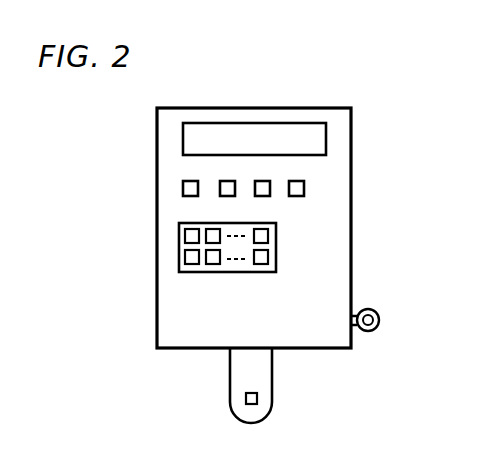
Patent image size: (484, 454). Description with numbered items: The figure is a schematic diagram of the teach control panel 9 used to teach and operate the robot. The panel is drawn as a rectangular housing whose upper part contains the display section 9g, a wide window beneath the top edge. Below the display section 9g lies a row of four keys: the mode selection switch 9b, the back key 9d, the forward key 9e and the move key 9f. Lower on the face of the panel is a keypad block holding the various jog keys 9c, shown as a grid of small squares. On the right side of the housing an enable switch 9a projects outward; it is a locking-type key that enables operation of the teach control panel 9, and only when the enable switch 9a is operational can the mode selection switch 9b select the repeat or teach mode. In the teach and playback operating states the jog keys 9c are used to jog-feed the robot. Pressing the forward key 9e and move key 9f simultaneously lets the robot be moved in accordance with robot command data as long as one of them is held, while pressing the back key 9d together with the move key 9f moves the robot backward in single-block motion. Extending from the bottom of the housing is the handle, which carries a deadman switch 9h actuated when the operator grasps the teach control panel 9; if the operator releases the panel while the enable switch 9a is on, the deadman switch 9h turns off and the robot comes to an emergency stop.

The teach control panel 9 is at (343, 270).
The enable switch 9a is at (379, 322).
The mode selection switch 9b is at (190, 181).
The jog keys 9c is at (183, 224).
The back key 9d is at (228, 181).
The forward key 9e is at (264, 181).
The move key 9f is at (298, 181).
The display section 9g is at (326, 136).
The deadman switch 9h is at (257, 398).